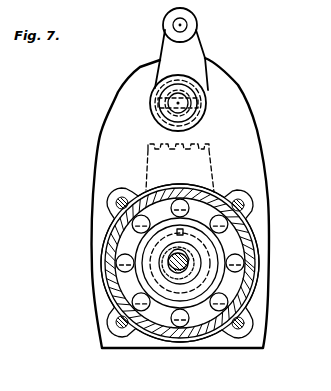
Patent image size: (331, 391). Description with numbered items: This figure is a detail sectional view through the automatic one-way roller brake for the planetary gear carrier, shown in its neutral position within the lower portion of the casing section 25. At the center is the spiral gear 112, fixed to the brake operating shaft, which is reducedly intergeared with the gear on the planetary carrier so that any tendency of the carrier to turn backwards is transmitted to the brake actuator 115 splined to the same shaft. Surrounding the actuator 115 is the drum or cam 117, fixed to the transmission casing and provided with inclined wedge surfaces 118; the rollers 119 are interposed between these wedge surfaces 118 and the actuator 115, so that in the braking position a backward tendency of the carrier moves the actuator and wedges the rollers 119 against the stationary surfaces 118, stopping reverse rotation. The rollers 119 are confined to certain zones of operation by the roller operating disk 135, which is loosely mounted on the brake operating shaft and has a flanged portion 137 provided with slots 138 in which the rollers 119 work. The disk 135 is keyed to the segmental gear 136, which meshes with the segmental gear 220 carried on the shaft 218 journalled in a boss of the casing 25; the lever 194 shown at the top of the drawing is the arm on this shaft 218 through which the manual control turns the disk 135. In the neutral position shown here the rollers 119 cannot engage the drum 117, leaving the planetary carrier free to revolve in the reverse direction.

The casing section 25 is at (252, 130).
The lever arm 194 is at (163, 63).
The shaft 218 is at (199, 103).
The segmental gear 220 is at (210, 137).
The segmental gear 136 is at (210, 162).
The drum or cam 117 is at (224, 206).
The rollers 119 is at (247, 210).
The inclined wedge surfaces 118 is at (257, 229).
The roller operating disk 135 is at (121, 243).
The flanged portion 137 is at (130, 283).
The slots 138 is at (138, 292).
The brake actuator 115 is at (214, 281).
The spiral gear 112 is at (206, 254).